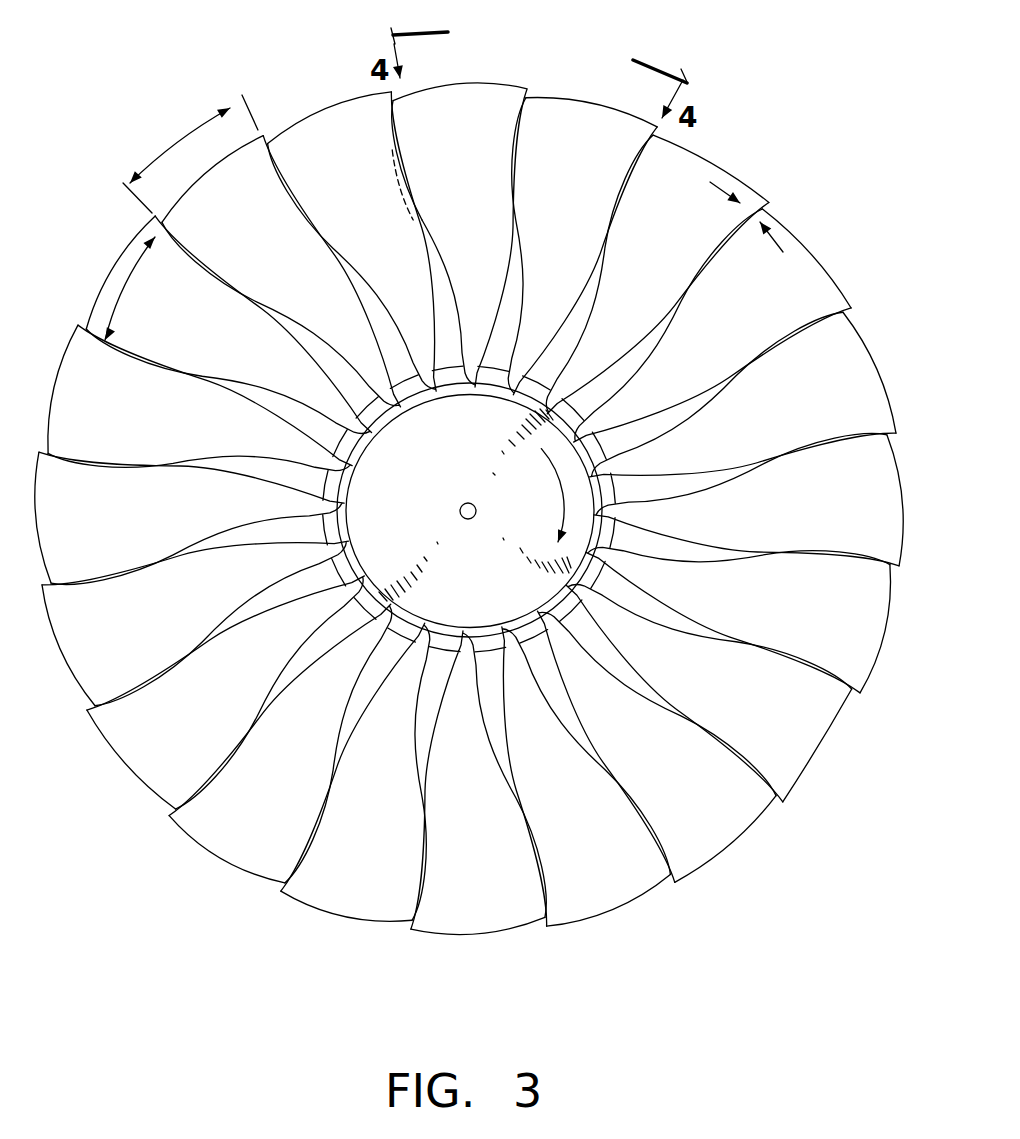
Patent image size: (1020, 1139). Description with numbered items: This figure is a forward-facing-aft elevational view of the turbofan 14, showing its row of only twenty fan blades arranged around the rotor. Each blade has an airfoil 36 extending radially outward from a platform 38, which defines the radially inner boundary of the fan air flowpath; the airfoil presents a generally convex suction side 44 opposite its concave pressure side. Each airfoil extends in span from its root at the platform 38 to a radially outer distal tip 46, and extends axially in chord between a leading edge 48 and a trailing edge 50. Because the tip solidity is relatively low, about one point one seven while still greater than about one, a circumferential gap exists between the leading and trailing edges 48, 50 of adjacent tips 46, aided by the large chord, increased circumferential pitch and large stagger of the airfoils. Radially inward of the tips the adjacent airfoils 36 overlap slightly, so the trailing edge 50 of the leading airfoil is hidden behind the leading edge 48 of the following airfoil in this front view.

The turbofan 14 is at (767, 132).
The airfoil 36 is at (860, 353).
The platform 38 is at (600, 438).
The suction side 44 is at (576, 207).
The tip 46 is at (482, 85).
The leading edge 48 is at (402, 172).
The trailing edge 50 is at (432, 263).